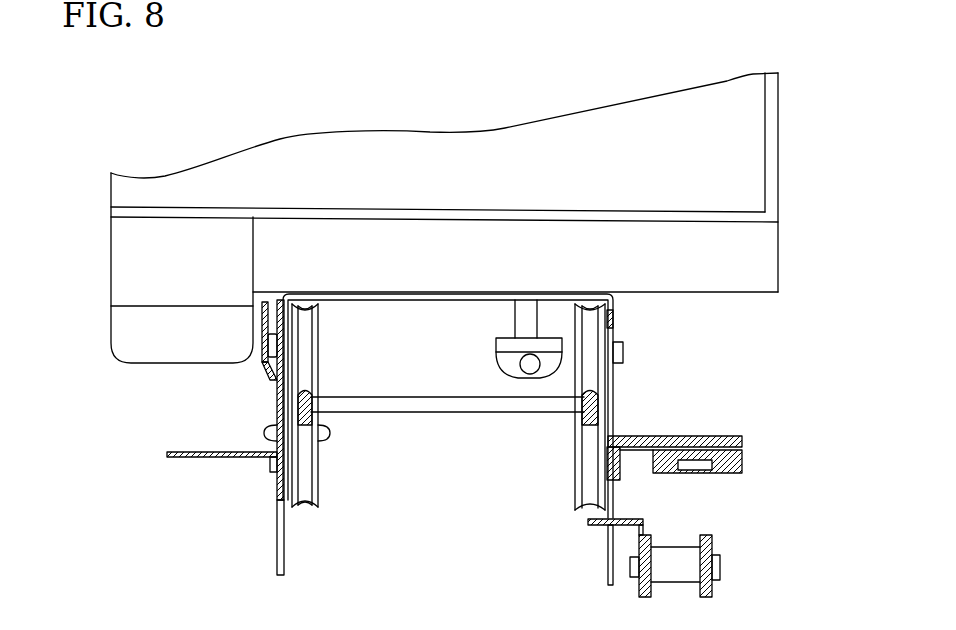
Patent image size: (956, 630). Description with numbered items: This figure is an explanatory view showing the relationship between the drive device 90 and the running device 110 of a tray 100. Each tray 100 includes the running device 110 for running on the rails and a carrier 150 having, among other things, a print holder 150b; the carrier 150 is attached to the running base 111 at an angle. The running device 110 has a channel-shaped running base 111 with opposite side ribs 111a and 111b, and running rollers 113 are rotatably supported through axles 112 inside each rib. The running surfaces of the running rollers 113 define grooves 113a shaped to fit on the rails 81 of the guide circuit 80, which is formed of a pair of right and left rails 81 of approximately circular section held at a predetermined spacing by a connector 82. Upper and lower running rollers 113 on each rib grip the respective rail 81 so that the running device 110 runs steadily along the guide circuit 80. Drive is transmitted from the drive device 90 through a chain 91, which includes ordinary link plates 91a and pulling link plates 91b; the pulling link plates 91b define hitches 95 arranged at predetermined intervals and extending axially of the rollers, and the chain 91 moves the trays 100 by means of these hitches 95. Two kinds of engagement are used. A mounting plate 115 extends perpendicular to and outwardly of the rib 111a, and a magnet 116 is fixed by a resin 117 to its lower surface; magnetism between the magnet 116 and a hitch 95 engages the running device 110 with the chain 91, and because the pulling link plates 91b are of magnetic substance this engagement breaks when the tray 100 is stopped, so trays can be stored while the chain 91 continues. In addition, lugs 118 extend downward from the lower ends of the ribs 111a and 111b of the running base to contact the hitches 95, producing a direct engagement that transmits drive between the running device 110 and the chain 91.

The tray 100 is at (246, 136).
The carrier 150 is at (736, 298).
The print holder 150b is at (502, 164).
The running base 111 is at (462, 293).
The side rib 111a is at (275, 487).
The side rib 111b is at (615, 399).
The axle 112 is at (270, 352).
The running roller 113 is at (318, 338).
The groove 113a is at (300, 302).
The guide circuit 80 is at (388, 394).
The rail 81 is at (318, 438).
The connector 82 is at (475, 413).
The mounting plate 115 is at (715, 440).
The magnet 116 is at (700, 472).
The resin 117 is at (742, 460).
The lug 118 is at (277, 566).
The hitch 95 is at (590, 523).
The drive device 90 is at (714, 531).
The chain 91 is at (680, 580).
The link plate 91a is at (713, 548).
The pulling link plate 91b is at (638, 597).
The running device 110 is at (180, 527).